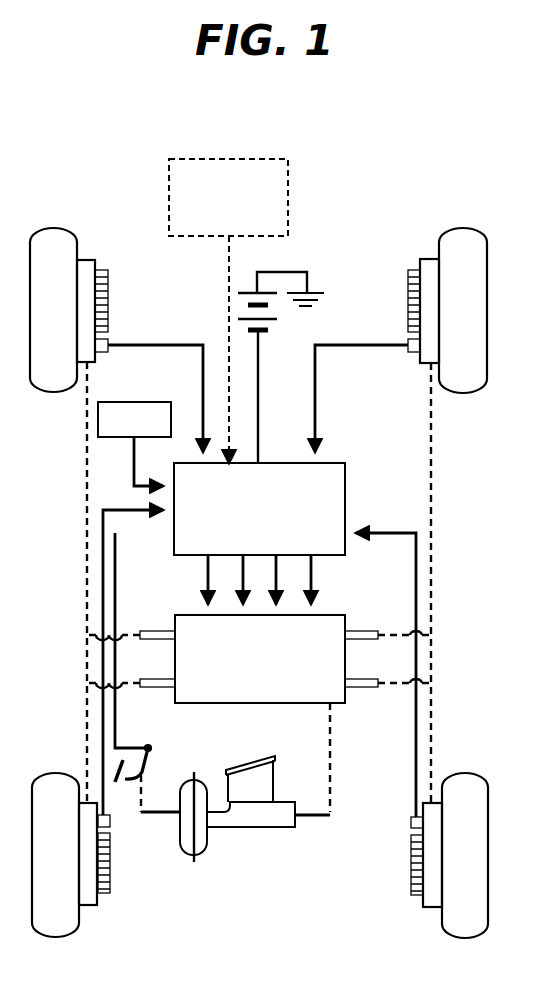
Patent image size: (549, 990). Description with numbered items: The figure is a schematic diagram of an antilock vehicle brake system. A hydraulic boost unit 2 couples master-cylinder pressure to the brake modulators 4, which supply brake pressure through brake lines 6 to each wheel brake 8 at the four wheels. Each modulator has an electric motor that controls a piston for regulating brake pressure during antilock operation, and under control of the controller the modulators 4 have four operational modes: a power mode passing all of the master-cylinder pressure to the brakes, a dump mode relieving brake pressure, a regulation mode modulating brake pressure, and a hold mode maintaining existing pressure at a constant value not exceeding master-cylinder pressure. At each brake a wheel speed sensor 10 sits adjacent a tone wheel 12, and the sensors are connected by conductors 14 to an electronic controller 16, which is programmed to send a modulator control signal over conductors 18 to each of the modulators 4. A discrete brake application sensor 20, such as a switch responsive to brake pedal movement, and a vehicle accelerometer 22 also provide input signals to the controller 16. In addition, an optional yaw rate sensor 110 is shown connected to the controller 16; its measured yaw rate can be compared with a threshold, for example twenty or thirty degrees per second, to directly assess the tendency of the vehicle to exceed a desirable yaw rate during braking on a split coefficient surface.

The hydraulic boost unit 2 is at (255, 820).
The brake modulators 4 is at (172, 657).
The brake lines 6 is at (432, 562).
The wheel brake 8 is at (84, 262).
The wheel speed sensor 10 is at (103, 348).
The tone wheel 12 is at (108, 298).
The conductors 14 is at (158, 344).
The electronic controller 16 is at (345, 492).
The conductors 18 is at (243, 568).
The brake application sensor 20 is at (139, 747).
The vehicle accelerometer 22 is at (118, 437).
The yaw rate sensor 110 is at (232, 158).